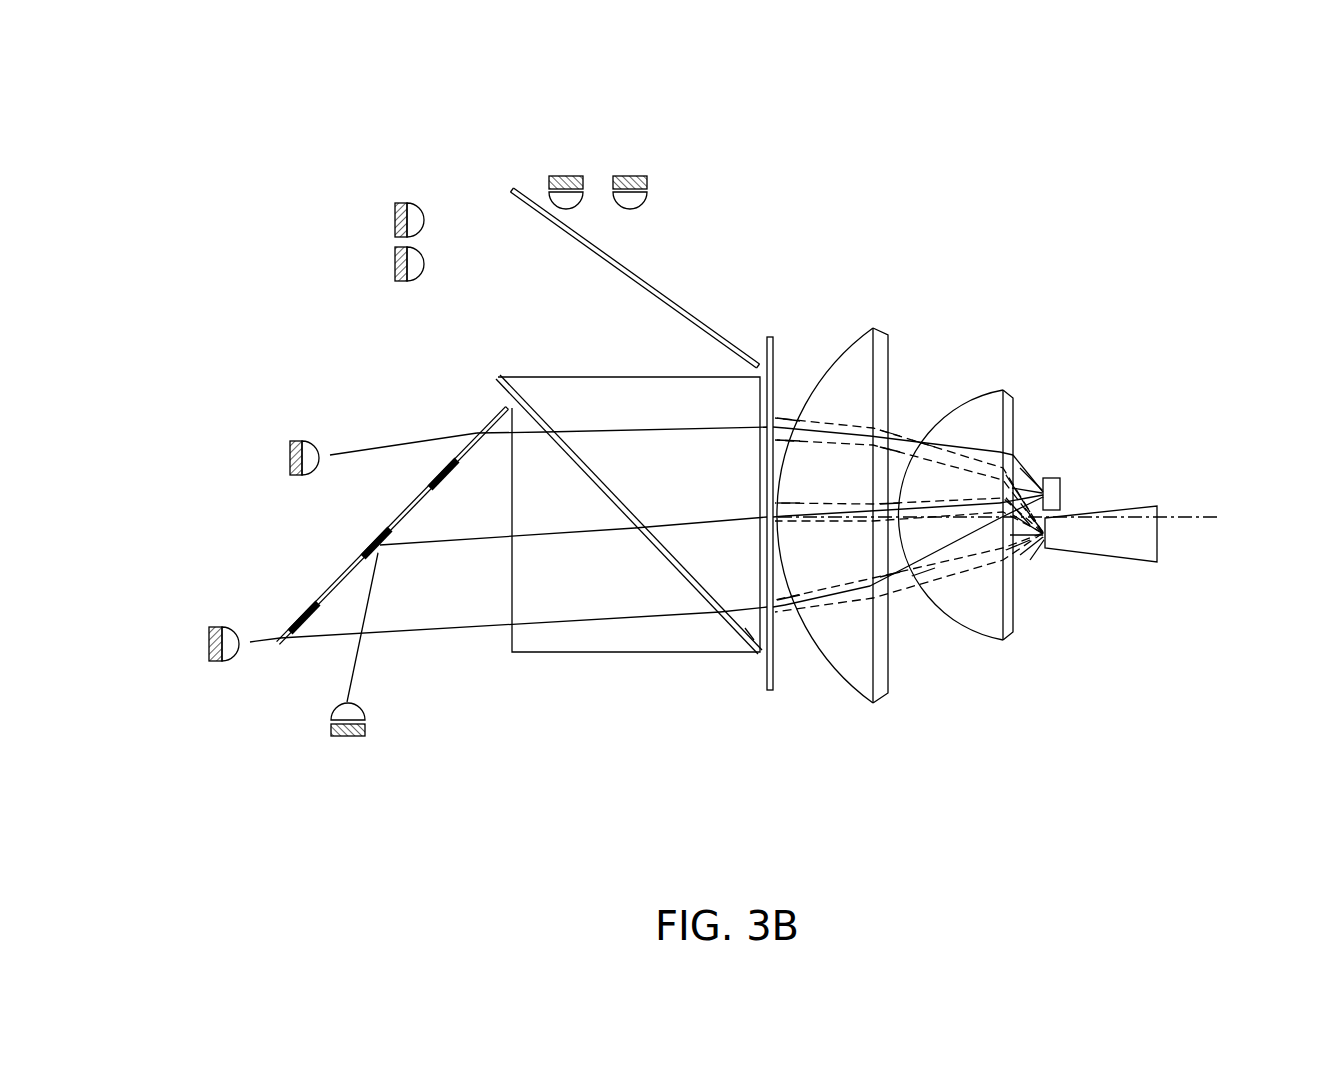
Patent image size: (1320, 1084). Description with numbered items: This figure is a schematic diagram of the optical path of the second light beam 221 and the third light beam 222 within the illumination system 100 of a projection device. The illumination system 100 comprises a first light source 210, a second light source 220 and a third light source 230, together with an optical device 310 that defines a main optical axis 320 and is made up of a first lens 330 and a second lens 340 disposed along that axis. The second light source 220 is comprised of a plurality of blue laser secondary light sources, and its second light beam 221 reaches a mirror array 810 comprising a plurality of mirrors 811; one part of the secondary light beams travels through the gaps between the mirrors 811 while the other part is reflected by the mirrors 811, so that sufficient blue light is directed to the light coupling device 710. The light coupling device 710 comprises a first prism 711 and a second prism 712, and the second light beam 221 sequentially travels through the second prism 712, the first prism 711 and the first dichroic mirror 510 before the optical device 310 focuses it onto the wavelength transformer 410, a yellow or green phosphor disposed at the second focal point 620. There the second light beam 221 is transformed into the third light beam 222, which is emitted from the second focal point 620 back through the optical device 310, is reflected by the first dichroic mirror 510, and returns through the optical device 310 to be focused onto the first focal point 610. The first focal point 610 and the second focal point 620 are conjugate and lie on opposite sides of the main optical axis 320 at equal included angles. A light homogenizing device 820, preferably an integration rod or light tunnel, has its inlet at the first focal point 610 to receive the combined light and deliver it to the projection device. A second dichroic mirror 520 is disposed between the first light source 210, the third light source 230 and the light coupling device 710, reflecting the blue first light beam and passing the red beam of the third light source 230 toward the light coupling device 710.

The illumination system 100 is at (426, 114).
The first light source 210 is at (396, 216).
The second light source 220 is at (288, 456).
The second light beam 221 is at (433, 544).
The third light beam 222 is at (915, 426).
The third light source 230 is at (630, 176).
The optical device 310 is at (895, 564).
The main optical axis 320 is at (1207, 513).
The first lens 330 is at (865, 675).
The second lens 340 is at (955, 565).
The wavelength transformer 410 is at (1058, 503).
The first dichroic mirror 510 is at (773, 378).
The second dichroic mirror 520 is at (684, 314).
The first focal point 610 is at (1048, 547).
The second focal point 620 is at (1047, 500).
The light coupling device 710 is at (634, 604).
The first prism 711 is at (540, 770).
The second prism 712 is at (558, 638).
The mirror array 810 is at (474, 447).
The mirrors 811 is at (367, 543).
The light homogenizing device 820 is at (1148, 552).